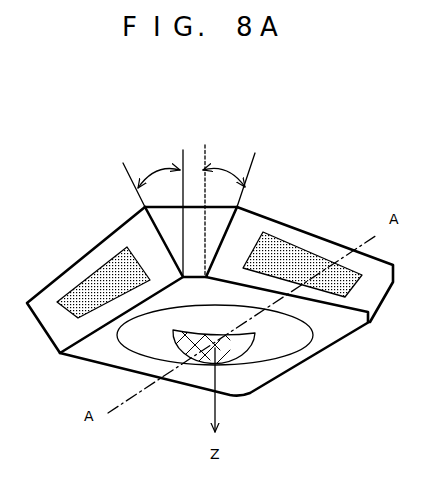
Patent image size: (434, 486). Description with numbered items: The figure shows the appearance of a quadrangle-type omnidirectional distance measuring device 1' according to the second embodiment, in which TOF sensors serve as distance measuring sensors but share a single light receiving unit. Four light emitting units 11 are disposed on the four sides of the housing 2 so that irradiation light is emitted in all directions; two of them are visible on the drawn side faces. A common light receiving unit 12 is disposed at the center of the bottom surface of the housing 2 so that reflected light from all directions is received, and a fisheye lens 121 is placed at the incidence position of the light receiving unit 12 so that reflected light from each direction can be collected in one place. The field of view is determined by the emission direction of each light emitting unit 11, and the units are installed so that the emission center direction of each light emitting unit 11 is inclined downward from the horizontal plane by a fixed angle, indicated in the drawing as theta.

The omnidirectional distance measuring device 1' is at (210, 279).
The housing 2 is at (273, 220).
The light emitting unit 11 is at (100, 273).
The light receiving unit 12 is at (247, 352).
The fisheye lens 121 is at (200, 340).